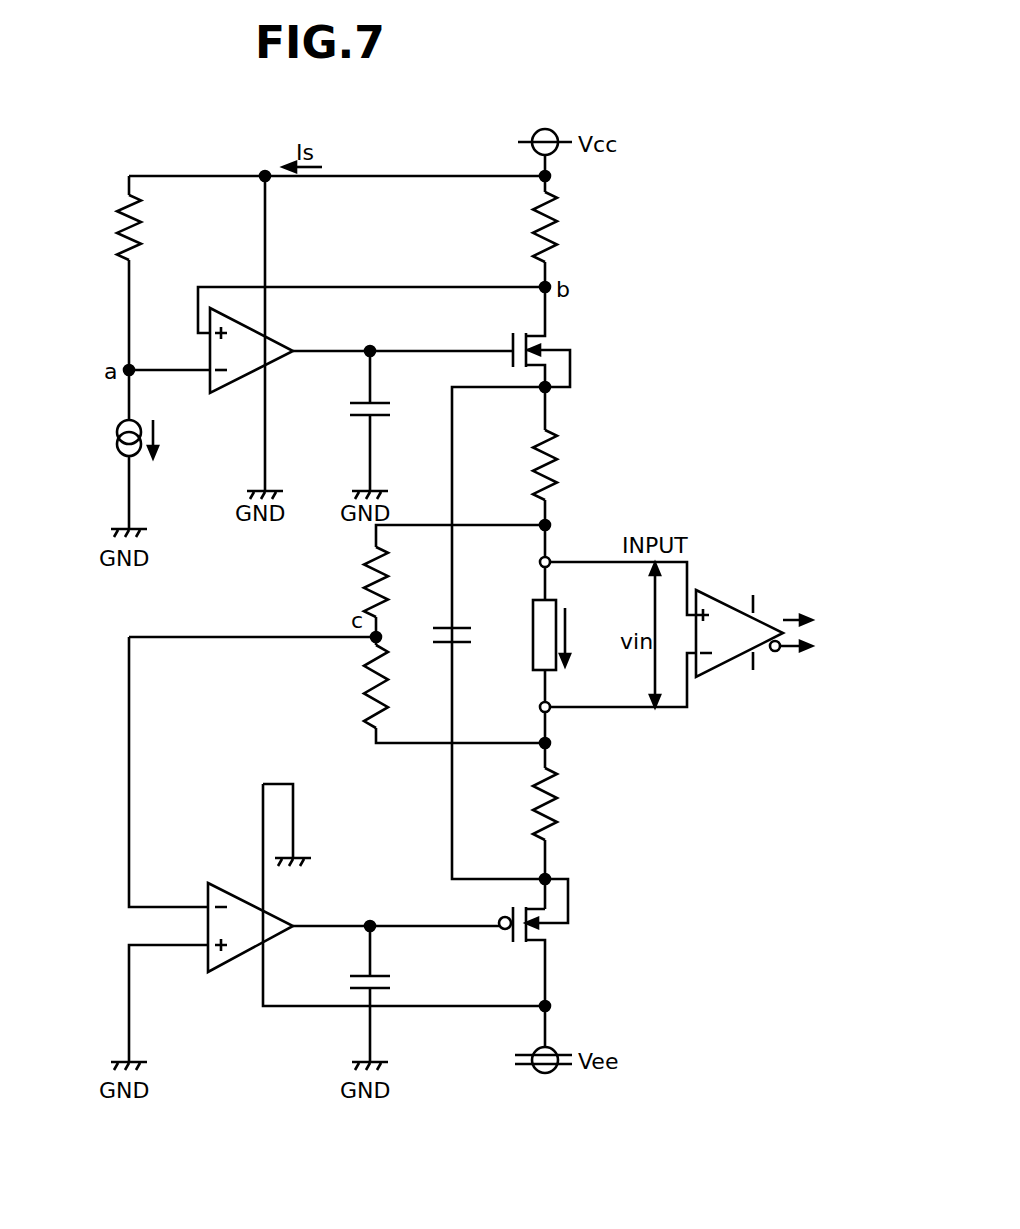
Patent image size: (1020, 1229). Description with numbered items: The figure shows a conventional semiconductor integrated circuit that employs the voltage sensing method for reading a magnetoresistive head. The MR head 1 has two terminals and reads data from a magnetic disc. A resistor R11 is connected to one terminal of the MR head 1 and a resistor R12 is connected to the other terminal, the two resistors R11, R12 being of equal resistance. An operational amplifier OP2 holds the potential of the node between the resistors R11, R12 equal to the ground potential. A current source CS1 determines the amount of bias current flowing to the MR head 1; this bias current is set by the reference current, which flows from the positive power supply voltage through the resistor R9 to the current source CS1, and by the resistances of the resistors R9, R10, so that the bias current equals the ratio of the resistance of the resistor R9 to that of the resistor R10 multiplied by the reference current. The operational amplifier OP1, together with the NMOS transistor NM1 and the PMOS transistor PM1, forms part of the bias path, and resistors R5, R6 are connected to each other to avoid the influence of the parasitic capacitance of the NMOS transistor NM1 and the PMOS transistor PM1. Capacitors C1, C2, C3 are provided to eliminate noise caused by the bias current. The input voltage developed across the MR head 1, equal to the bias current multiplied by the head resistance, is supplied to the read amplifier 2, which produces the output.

The MR head 1 is at (533, 598).
The read amplifier 2 is at (710, 675).
The resistor R9 is at (109, 218).
The resistor R10 is at (520, 219).
The resistor R5 is at (526, 443).
The resistor R6 is at (526, 791).
The resistor R11 is at (428, 571).
The resistor R12 is at (428, 694).
The capacitor C1 is at (469, 633).
The capacitor C2 is at (347, 421).
The capacitor C3 is at (347, 994).
The operational amplifier OP1 is at (272, 350).
The operational amplifier OP2 is at (270, 927).
The NMOS transistor NM1 is at (561, 355).
The PMOS transistor PM1 is at (550, 942).
The current source CS1 is at (118, 439).